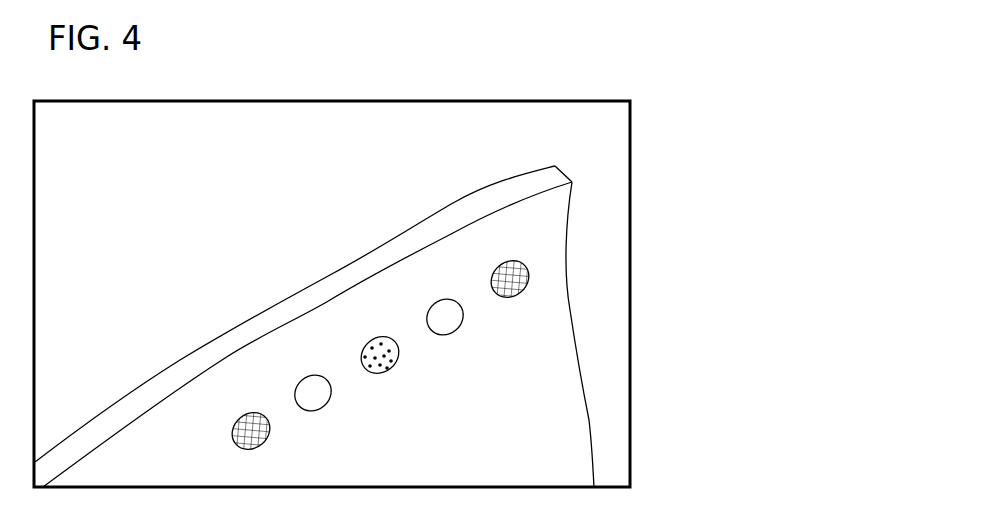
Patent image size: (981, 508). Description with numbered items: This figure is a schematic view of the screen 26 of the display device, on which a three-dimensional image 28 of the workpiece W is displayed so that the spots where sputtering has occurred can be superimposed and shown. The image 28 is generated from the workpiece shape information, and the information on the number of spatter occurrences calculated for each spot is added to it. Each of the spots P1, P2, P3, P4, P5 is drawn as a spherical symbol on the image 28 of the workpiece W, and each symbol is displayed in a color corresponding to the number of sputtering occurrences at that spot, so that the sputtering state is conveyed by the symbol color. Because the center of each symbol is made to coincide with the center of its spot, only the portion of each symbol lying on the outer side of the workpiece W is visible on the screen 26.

The screen 26 is at (478, 99).
The three-dimensional image 28 is at (615, 213).
The workpiece W is at (588, 419).
The spot P1 is at (257, 449).
The spot P2 is at (323, 410).
The spot P3 is at (388, 372).
The spot P4 is at (452, 333).
The spot P5 is at (517, 297).